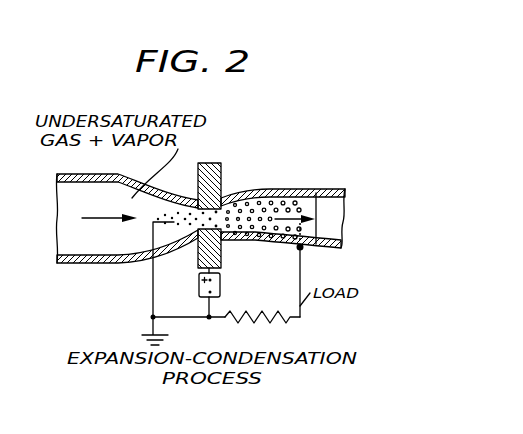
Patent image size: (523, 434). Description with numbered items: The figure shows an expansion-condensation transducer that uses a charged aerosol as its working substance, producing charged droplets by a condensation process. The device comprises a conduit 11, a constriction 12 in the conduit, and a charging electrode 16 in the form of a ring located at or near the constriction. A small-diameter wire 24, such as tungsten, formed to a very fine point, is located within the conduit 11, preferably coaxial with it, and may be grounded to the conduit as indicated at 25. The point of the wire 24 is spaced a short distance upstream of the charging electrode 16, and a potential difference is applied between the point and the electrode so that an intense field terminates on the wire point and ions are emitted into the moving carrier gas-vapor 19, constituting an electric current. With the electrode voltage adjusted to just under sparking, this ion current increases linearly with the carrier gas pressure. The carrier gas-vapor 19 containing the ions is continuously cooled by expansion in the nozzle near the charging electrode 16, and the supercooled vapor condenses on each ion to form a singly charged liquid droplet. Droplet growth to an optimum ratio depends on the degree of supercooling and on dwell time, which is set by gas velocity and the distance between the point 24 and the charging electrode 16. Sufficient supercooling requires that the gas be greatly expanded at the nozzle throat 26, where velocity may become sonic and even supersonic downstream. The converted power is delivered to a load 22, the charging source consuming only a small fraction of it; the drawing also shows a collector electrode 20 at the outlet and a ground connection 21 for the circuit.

The conduit 11 is at (62, 263).
The constriction 12 is at (227, 202).
The charging electrode 16 is at (213, 163).
The carrier gas-vapor 19 is at (57, 217).
The collector electrode 20 is at (310, 193).
The ground connection 21 is at (180, 292).
The load 22 is at (266, 297).
The wire 24 is at (172, 218).
The ground connection of wire 25 is at (152, 255).
The nozzle throat 26 is at (223, 226).